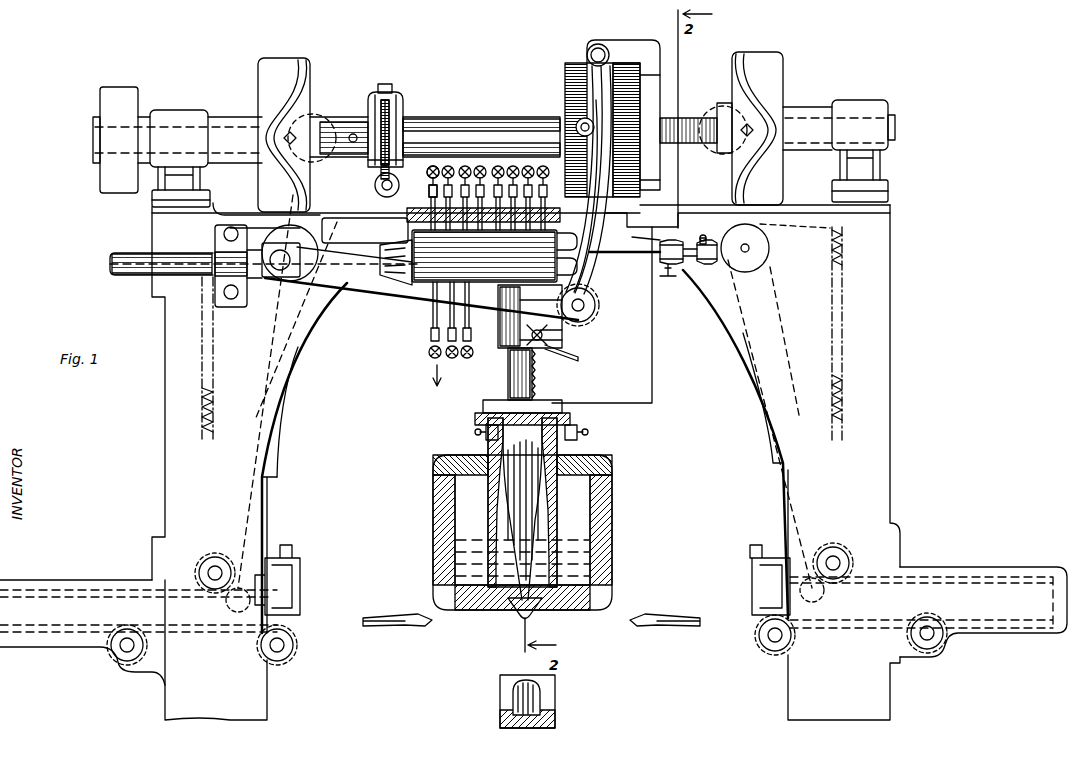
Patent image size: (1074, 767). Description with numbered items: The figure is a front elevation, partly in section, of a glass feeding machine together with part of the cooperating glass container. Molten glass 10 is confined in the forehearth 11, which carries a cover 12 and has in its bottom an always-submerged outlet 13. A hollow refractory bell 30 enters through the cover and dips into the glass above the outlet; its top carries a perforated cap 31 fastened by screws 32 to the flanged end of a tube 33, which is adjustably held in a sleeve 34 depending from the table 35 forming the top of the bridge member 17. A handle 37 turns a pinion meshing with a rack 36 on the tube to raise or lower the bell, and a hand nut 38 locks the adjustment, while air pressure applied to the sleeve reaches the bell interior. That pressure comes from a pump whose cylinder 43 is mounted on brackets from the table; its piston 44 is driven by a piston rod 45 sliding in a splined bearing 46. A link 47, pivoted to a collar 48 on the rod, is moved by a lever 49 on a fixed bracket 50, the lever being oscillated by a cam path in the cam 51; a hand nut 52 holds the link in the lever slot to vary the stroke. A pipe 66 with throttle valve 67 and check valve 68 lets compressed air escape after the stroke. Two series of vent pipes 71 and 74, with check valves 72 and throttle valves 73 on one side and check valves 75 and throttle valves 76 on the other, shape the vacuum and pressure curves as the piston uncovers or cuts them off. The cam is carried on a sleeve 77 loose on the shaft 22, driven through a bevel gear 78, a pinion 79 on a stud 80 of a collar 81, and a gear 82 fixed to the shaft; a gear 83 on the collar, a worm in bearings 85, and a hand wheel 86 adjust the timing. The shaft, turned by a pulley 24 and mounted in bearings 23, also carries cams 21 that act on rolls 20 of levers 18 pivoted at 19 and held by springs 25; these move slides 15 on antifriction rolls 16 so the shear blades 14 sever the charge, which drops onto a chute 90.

The molten glass 10 is at (613, 507).
The forehearth 11 is at (612, 552).
The cover 12 is at (607, 458).
The outlet 13 is at (535, 603).
The shear blades 14 is at (400, 616).
The slides 15 is at (55, 597).
The antifriction rolls 16 is at (199, 566).
The bridge member 17 is at (165, 440).
The levers 18 is at (293, 394).
The pivot 19 is at (320, 293).
The rolls 20 is at (322, 116).
The cams 21 is at (270, 62).
The shaft 22 is at (812, 105).
The bearings 23 is at (195, 110).
The pulley 24 is at (102, 88).
The springs 25 is at (205, 392).
The bell 30 is at (488, 496).
The perforated cap 31 is at (483, 410).
The screws 32 is at (478, 432).
The tube 33 is at (508, 380).
The sleeve 34 is at (500, 340).
The table 35 is at (630, 252).
The rack 36 is at (536, 386).
The handle 37 is at (556, 340).
The hand nut 38 is at (580, 359).
The cylinder 43 is at (437, 266).
The piston 44 is at (380, 292).
The piston rod 45 is at (142, 276).
The bearing 46 is at (215, 300).
The link 47 is at (385, 303).
The collar 48 is at (265, 280).
The lever 49 is at (596, 290).
The fixed bracket 50 is at (648, 42).
The cam 51 is at (578, 66).
The hand nut 52 is at (598, 312).
The pipe 66 is at (602, 268).
The throttle valve 67 is at (668, 280).
The check valve 68 is at (708, 240).
The pipes 71 is at (540, 170).
The check valve 72 is at (429, 191).
The throttle valve 73 is at (427, 172).
The pipes 74 is at (447, 300).
The check valves 75 is at (437, 335).
The throttle valves 76 is at (430, 356).
The sleeve 77 is at (458, 117).
The bevel gear 78 is at (398, 106).
The pinion 79 is at (393, 98).
The stud 80 is at (371, 113).
The collar 81 is at (402, 124).
The gear 82 is at (370, 166).
The gear 83 is at (380, 173).
The bearings 85 is at (390, 200).
The hand wheel 86 is at (377, 192).
The chute 90 is at (537, 700).